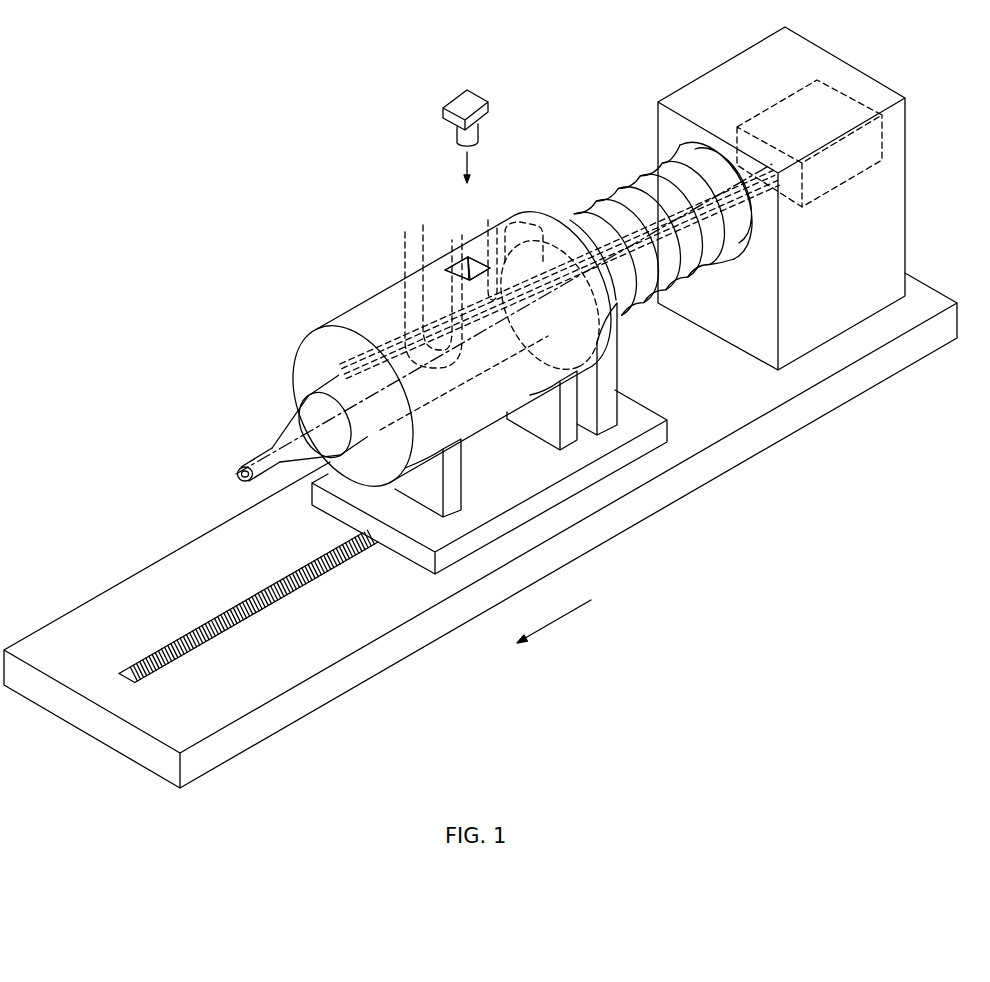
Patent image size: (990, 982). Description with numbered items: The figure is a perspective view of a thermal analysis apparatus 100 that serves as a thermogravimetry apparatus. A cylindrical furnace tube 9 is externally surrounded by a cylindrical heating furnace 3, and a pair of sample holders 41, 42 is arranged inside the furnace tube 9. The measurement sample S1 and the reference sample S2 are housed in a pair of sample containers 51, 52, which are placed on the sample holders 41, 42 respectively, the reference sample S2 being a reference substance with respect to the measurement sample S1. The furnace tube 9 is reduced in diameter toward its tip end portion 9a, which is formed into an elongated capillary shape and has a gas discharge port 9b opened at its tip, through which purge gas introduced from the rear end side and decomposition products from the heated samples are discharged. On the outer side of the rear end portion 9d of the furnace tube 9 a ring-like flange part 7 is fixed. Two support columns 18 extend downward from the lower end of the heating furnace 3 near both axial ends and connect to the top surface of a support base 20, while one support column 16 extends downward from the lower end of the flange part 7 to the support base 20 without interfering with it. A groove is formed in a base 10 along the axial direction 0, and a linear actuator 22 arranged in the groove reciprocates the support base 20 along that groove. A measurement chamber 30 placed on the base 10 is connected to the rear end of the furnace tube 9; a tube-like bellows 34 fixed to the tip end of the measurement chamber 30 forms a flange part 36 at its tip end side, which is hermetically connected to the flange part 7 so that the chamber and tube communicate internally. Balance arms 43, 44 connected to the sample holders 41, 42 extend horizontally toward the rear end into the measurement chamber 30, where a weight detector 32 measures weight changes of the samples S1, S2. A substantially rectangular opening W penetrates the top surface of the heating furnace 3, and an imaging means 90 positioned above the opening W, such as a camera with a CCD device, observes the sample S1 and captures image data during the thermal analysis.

The thermal analysis apparatus 100 is at (747, 559).
The base 10 is at (682, 488).
The linear actuator 22 is at (146, 653).
The support base 20 is at (408, 557).
The support columns 18 is at (572, 415).
The support column 16 is at (612, 410).
The heating furnace 3 is at (331, 318).
The flange part 7 is at (577, 233).
The flange part 36 is at (586, 226).
The furnace tube 9 is at (308, 399).
The tip end portion 9a is at (256, 452).
The gas discharge port 9b is at (236, 475).
The rear end portion 9d is at (526, 233).
The balance arm 44 is at (606, 344).
The balance arm 43 is at (504, 262).
The sample holder 41 is at (394, 275).
The sample container 51 is at (427, 258).
The sample holder 42 is at (392, 300).
The sample container 52 is at (405, 303).
The opening W is at (461, 268).
The measurement sample S1 is at (448, 282).
The reference sample S2 is at (515, 281).
The bellows 34 is at (692, 277).
The measurement chamber 30 is at (895, 219).
The weight detector 32 is at (879, 147).
The imaging means 90 is at (461, 100).
The axial direction 0 is at (554, 628).